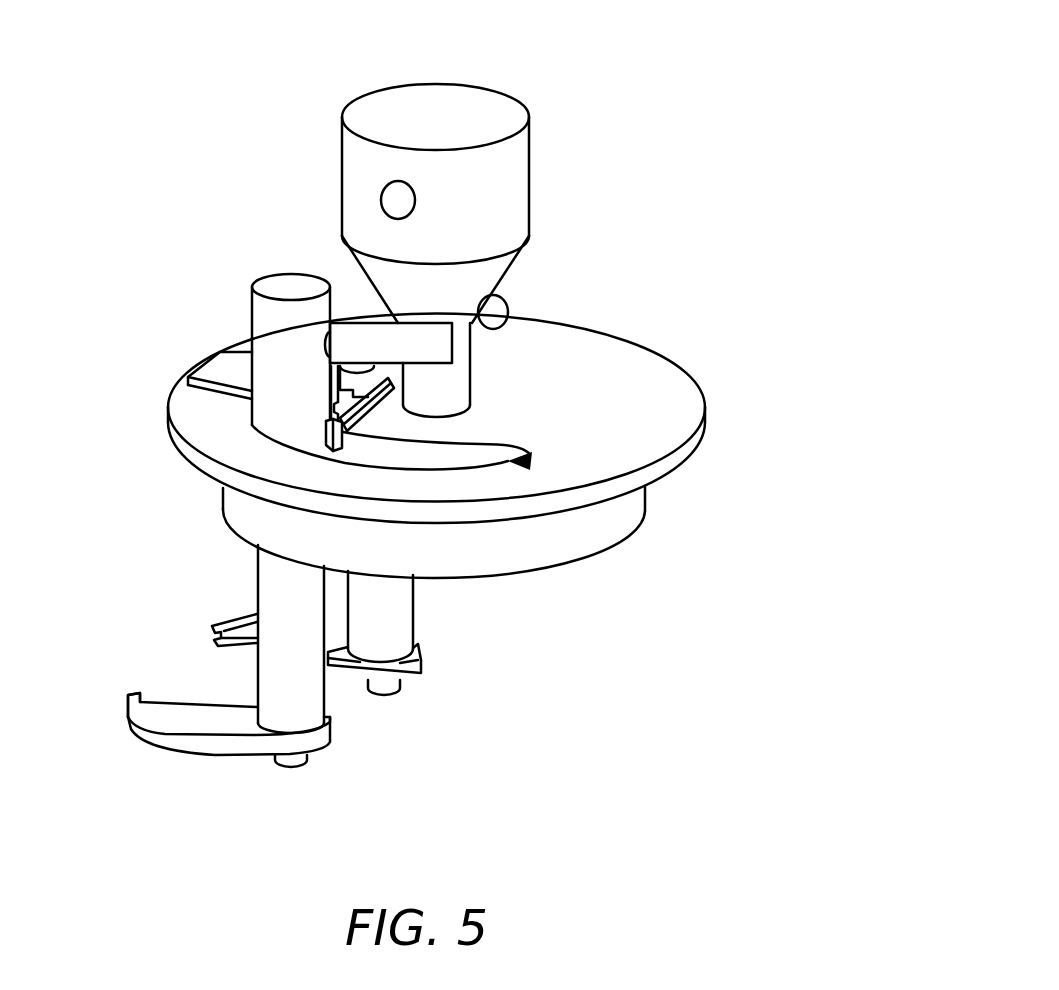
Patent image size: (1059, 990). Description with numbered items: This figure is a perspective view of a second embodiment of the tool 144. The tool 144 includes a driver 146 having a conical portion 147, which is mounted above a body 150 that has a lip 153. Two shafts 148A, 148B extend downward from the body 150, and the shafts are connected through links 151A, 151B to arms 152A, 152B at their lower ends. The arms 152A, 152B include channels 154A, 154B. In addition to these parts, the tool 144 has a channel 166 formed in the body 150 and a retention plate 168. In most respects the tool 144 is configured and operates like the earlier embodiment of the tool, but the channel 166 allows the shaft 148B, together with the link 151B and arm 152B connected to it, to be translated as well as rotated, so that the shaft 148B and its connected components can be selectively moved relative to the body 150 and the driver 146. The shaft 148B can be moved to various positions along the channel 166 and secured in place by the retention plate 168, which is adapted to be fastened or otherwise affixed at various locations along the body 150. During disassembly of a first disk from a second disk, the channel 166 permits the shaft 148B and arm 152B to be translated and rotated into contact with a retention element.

The tool 144 is at (684, 86).
The driver 146 is at (520, 165).
The conical portion 147 is at (495, 265).
The link 151A is at (505, 305).
The link 151B is at (440, 347).
The retention plate 168 is at (218, 368).
The channel 166 is at (532, 462).
The body 150 is at (682, 392).
The lip 153 is at (683, 457).
The shaft 148A is at (413, 616).
The shaft 148B is at (312, 688).
The arm 152A is at (405, 672).
The arm 152B is at (262, 745).
The channel 154A is at (215, 633).
The channel 154B is at (128, 695).